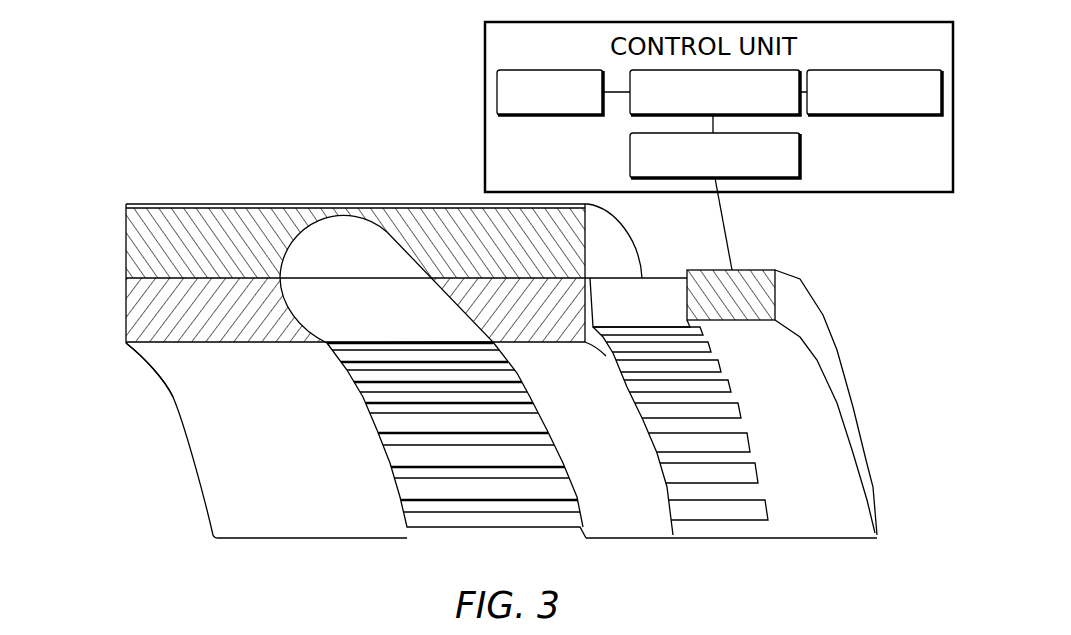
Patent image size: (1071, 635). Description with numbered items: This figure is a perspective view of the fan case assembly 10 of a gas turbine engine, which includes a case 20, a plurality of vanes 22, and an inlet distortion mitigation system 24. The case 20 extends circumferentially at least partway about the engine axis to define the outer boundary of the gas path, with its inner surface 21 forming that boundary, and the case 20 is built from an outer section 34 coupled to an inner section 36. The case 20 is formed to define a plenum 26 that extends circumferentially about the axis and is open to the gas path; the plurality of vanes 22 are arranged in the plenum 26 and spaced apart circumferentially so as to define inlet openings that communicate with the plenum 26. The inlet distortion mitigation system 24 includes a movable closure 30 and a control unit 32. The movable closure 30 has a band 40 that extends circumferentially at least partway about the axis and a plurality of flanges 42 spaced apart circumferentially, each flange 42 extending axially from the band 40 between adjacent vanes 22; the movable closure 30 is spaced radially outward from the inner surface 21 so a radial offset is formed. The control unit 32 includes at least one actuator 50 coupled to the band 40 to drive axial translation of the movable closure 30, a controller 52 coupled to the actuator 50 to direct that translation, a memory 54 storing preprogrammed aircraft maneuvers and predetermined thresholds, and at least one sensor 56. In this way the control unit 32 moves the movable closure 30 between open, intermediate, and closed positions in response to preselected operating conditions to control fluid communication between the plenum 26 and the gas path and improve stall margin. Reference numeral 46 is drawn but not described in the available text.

The fan case assembly 10 is at (147, 128).
The case 20 is at (103, 160).
The inner surface 21 is at (173, 355).
The plurality of vanes 22 is at (380, 425).
The inlet distortion mitigation system 24 is at (897, 245).
The plenum 26 is at (320, 257).
The movable closure 30 is at (843, 350).
The control unit 32 is at (833, 192).
The outer section 34 is at (125, 247).
The inner section 36 is at (125, 297).
The band 40 is at (867, 453).
The plurality of flanges 42 is at (690, 470).
The first openings 46 is at (537, 437).
The actuator 50 is at (630, 148).
The controller 52 is at (787, 69).
The memory 54 is at (887, 69).
The sensor 56 is at (560, 70).